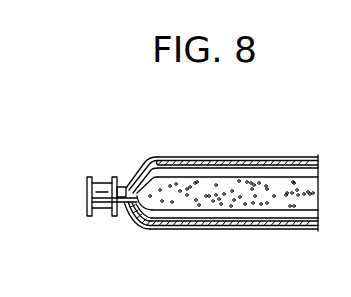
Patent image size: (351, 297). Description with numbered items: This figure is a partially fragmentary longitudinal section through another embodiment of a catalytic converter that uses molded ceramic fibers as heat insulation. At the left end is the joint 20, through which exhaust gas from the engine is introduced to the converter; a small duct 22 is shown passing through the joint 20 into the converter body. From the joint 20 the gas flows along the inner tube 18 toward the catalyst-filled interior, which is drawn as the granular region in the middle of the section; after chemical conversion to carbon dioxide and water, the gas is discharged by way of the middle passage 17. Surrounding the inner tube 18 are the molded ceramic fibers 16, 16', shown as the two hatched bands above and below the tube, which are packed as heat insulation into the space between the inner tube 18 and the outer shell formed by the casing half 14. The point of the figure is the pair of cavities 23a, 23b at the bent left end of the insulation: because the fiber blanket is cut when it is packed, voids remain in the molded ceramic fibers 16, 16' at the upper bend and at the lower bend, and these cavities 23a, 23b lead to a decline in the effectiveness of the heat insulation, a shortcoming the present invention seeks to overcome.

The casing half 14 is at (295, 159).
The molded ceramic fibers 16 is at (238, 134).
The molded ceramic fibers 16' is at (234, 256).
The middle passage 17 is at (300, 230).
The inner tube 18 is at (247, 164).
The joint 20 is at (88, 195).
The tube 22 is at (130, 206).
The cavity 23a is at (158, 160).
The cavity 23b is at (150, 229).